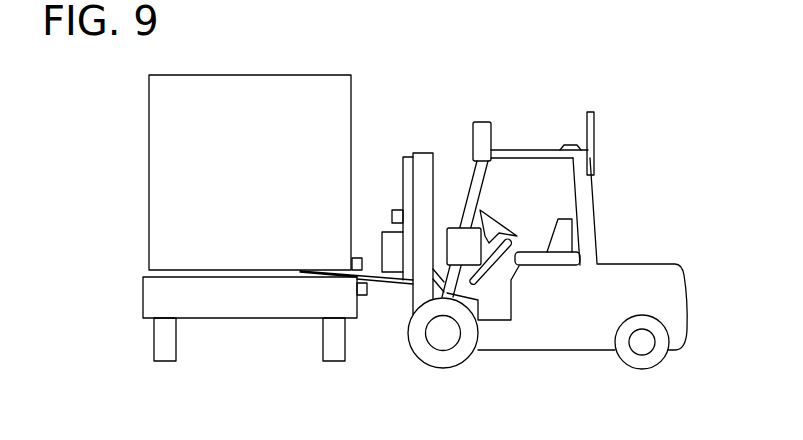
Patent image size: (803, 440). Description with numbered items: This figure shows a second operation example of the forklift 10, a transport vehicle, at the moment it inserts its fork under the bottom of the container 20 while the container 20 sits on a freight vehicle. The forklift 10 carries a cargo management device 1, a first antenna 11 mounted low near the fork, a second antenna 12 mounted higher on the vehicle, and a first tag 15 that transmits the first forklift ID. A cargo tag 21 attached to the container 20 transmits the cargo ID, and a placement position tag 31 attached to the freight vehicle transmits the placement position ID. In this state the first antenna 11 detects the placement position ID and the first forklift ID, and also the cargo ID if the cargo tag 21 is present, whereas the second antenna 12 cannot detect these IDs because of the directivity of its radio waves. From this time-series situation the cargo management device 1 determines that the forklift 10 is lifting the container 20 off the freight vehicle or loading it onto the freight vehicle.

The cargo management device 1 is at (457, 228).
The forklift 10 is at (687, 296).
The first antenna 11 is at (396, 280).
The second antenna 12 is at (483, 122).
The first tag 15 is at (396, 210).
The container 20 is at (149, 171).
The cargo tag 21 is at (356, 257).
The placement position tag 31 is at (362, 296).